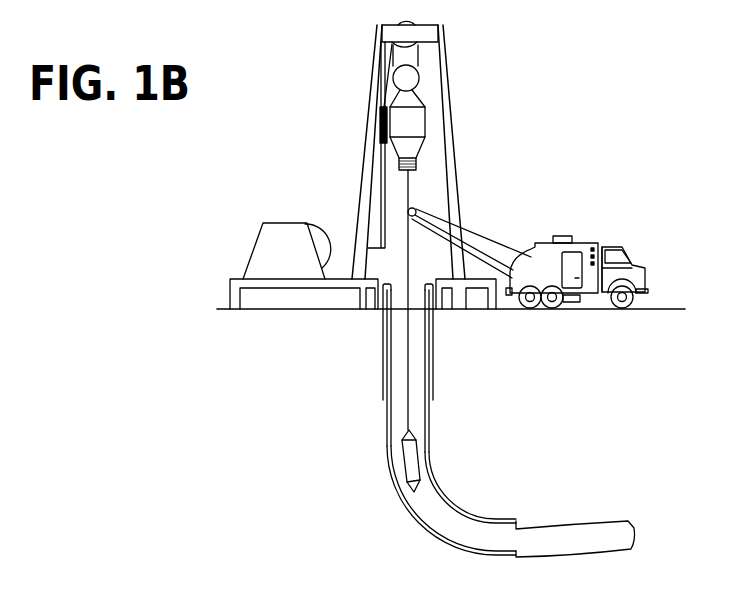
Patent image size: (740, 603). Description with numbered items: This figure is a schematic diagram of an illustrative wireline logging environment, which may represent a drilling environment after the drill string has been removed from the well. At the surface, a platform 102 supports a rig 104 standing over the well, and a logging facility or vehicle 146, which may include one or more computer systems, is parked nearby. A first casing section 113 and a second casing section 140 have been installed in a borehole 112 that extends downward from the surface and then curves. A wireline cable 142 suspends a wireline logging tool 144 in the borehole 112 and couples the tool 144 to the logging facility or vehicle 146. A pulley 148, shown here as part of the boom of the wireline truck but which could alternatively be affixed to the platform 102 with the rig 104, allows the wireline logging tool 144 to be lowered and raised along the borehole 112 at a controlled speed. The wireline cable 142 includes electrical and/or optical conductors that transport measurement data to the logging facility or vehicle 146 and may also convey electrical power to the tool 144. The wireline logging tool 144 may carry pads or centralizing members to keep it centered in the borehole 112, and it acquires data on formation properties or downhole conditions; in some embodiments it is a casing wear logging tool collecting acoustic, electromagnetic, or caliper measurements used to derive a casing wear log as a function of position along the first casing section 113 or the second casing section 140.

The platform 102 is at (229, 281).
The rig 104 is at (377, 55).
The pulley 148 is at (409, 210).
The logging facility or vehicle 146 is at (596, 252).
The first casing section 113 is at (385, 329).
The borehole 112 is at (396, 377).
The second casing section 140 is at (391, 458).
The wireline cable 142 is at (409, 380).
The wireline logging tool 144 is at (411, 453).